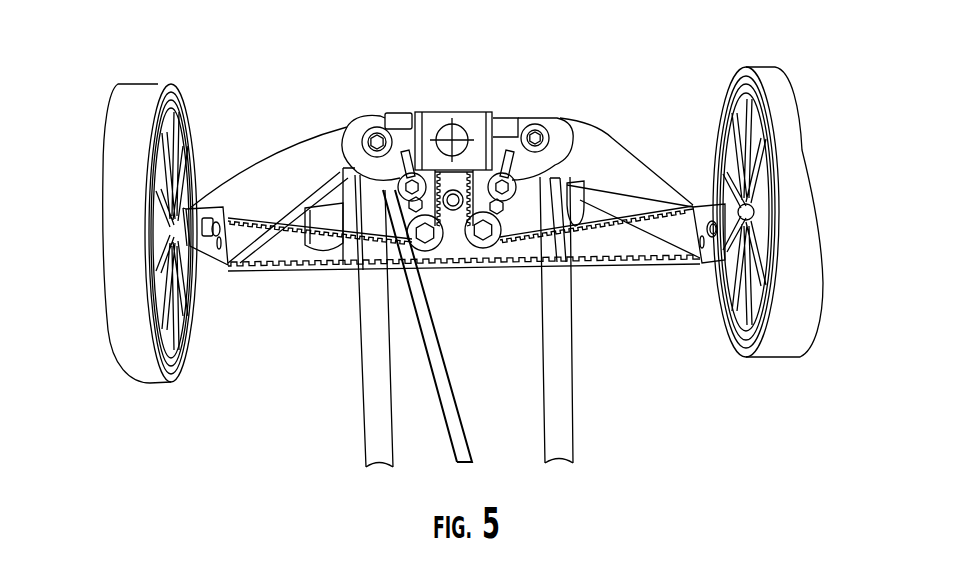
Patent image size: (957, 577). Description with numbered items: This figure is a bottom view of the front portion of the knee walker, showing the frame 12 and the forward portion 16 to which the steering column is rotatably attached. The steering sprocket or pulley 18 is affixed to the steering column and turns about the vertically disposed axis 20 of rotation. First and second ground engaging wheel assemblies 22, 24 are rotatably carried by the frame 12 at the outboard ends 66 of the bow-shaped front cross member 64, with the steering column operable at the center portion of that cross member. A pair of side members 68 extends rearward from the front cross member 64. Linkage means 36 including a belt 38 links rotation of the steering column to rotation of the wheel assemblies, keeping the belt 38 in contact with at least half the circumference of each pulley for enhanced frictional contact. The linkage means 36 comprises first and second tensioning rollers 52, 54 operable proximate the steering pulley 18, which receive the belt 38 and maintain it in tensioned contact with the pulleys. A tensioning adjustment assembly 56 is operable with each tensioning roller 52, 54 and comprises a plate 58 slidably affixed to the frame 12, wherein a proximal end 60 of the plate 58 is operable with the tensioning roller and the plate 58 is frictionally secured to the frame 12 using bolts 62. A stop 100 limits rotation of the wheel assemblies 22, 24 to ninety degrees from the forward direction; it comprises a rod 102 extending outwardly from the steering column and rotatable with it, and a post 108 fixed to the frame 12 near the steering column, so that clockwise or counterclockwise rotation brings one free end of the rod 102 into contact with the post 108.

The frame 12 is at (580, 318).
The forward portion 16 is at (342, 296).
The steering sprocket or pulley 18 is at (449, 212).
The vertically disposed axis 20 is at (455, 135).
The first ground engaging wheel assembly 22 is at (108, 318).
The second ground engaging wheel assembly 24 is at (803, 78).
The linkage means 36 is at (511, 273).
The belt 38 is at (635, 270).
The first tensioning roller 52 is at (428, 246).
The second tensioning roller 54 is at (484, 250).
The tensioning adjustment assembly 56 is at (380, 170).
The plate 58 is at (397, 228).
The proximal end 60 is at (362, 240).
The bolts 62 is at (402, 187).
The front cross member 64 is at (655, 152).
The outboard ends 66 is at (232, 198).
The side members 68 is at (378, 400).
The stop 100 is at (401, 105).
The rod 102 is at (403, 118).
The post 108 is at (455, 210).